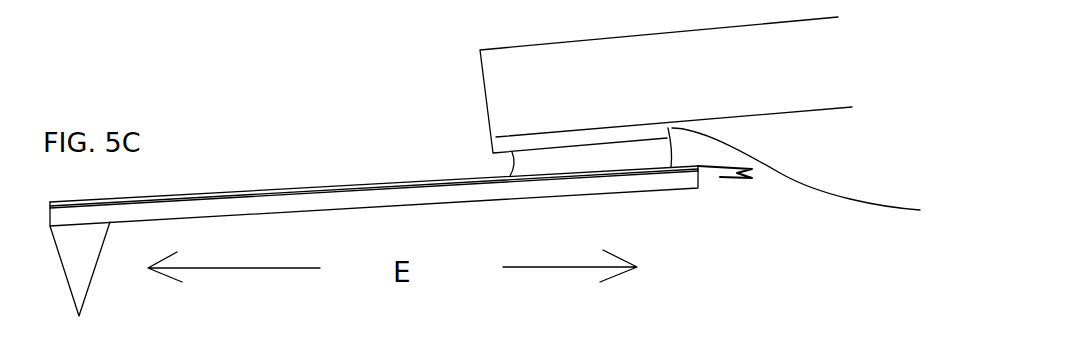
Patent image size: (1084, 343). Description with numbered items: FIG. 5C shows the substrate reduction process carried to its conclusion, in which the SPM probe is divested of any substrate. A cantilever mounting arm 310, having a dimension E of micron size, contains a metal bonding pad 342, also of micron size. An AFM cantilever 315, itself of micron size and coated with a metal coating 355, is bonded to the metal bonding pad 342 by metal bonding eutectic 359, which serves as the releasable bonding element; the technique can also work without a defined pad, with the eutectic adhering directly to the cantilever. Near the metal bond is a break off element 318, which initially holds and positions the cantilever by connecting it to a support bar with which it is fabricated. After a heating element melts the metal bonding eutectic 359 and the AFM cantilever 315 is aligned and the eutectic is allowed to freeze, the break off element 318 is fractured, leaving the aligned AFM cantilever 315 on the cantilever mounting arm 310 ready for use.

The cantilever mounting arm 310 is at (666, 85).
The AFM cantilever 315 is at (392, 197).
The break off element 318 is at (721, 176).
The metal bonding pad 342 is at (816, 175).
The metal coating 355 is at (503, 180).
The metal bonding eutectic 359 is at (591, 152).